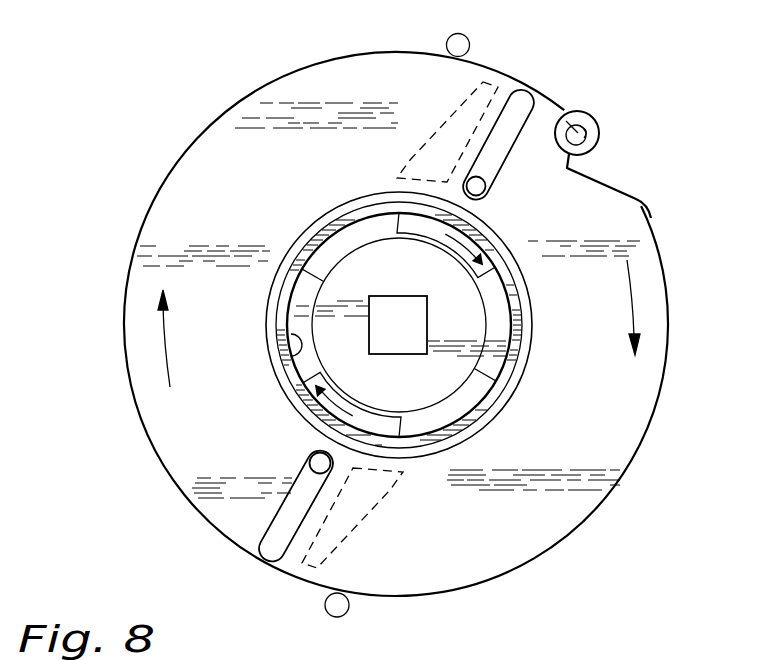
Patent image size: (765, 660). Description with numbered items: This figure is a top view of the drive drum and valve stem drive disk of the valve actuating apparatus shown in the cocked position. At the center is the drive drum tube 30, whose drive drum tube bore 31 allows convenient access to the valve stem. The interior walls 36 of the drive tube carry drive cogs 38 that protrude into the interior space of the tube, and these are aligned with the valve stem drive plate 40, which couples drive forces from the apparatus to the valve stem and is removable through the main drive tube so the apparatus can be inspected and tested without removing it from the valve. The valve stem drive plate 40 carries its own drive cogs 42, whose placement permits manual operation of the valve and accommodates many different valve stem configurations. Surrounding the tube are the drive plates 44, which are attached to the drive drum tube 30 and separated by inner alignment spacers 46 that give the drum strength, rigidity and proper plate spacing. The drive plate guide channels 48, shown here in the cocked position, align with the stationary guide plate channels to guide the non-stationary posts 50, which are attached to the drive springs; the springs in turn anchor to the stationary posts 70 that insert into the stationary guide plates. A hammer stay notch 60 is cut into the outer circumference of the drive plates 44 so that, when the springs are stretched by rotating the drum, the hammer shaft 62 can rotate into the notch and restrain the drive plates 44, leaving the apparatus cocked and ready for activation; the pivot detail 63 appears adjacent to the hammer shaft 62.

The drive drum tube 30 is at (532, 337).
The drive drum tube bore 31 is at (463, 405).
The interior walls 36 is at (295, 349).
The drive cogs 38 is at (476, 251).
The valve stem drive plate 40 is at (381, 282).
The drive cogs 42 is at (307, 314).
The drive plates 44 is at (641, 447).
The inner alignment spacers 46 is at (410, 159).
The drive plate guide channels 48 is at (495, 152).
The non-stationary posts 50 is at (484, 192).
The hammer stay notch 60 is at (621, 187).
The hammer shaft 62 is at (603, 141).
The pivot pin 63 is at (573, 112).
The stationary posts 70 is at (447, 44).